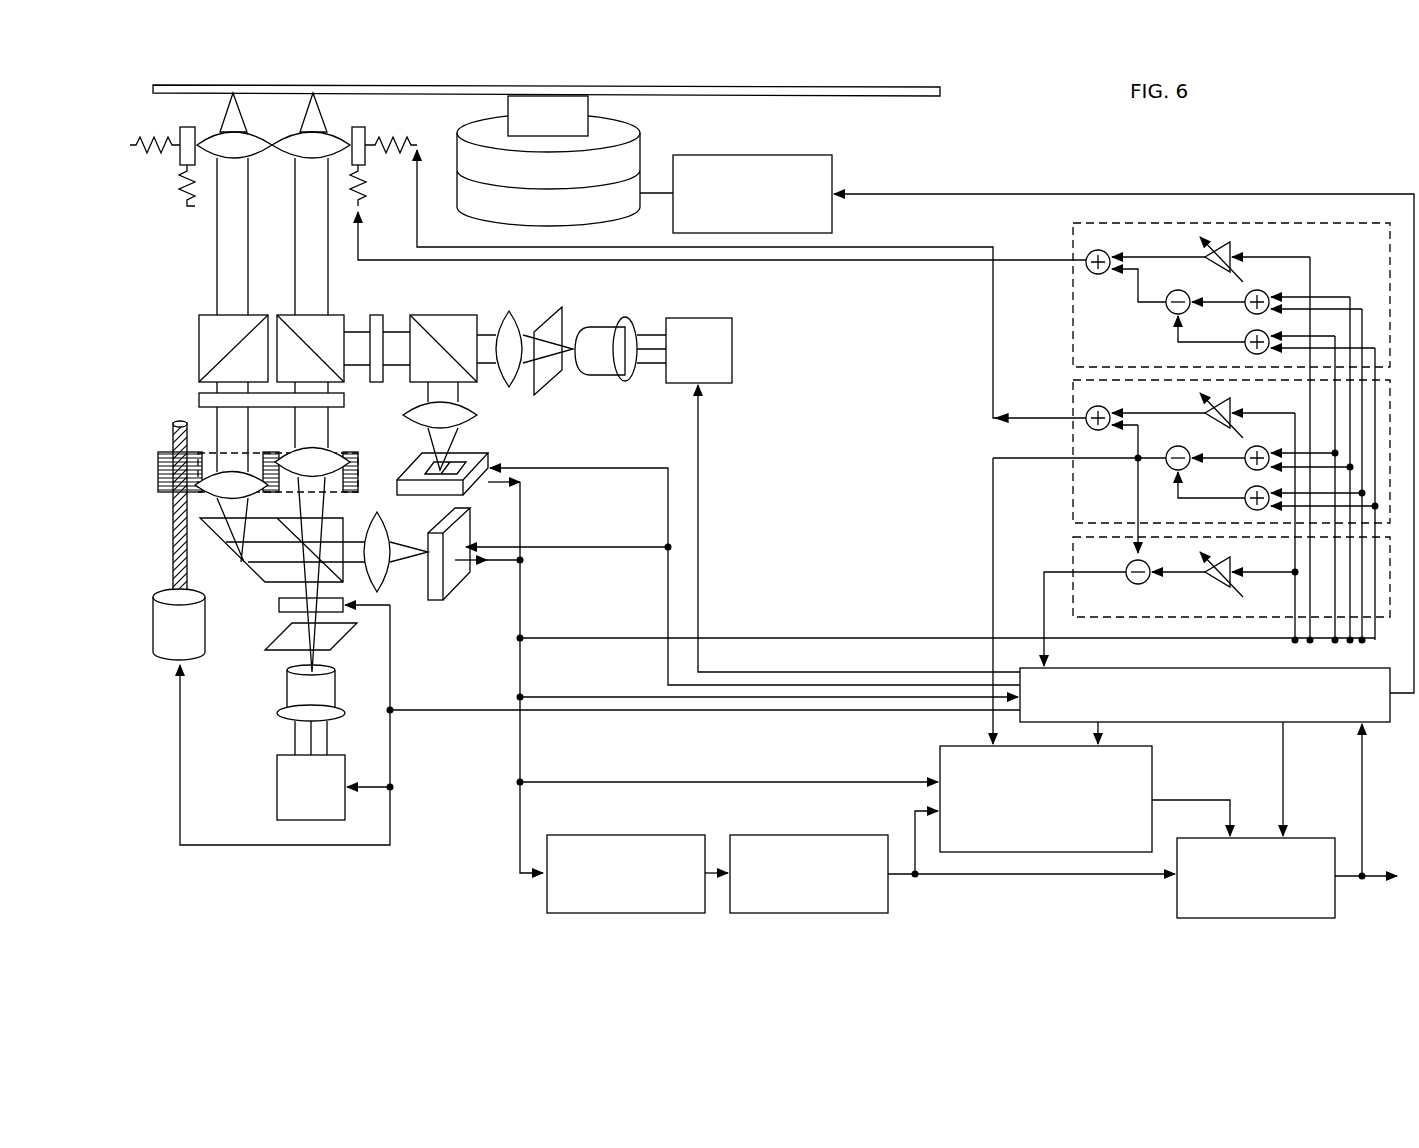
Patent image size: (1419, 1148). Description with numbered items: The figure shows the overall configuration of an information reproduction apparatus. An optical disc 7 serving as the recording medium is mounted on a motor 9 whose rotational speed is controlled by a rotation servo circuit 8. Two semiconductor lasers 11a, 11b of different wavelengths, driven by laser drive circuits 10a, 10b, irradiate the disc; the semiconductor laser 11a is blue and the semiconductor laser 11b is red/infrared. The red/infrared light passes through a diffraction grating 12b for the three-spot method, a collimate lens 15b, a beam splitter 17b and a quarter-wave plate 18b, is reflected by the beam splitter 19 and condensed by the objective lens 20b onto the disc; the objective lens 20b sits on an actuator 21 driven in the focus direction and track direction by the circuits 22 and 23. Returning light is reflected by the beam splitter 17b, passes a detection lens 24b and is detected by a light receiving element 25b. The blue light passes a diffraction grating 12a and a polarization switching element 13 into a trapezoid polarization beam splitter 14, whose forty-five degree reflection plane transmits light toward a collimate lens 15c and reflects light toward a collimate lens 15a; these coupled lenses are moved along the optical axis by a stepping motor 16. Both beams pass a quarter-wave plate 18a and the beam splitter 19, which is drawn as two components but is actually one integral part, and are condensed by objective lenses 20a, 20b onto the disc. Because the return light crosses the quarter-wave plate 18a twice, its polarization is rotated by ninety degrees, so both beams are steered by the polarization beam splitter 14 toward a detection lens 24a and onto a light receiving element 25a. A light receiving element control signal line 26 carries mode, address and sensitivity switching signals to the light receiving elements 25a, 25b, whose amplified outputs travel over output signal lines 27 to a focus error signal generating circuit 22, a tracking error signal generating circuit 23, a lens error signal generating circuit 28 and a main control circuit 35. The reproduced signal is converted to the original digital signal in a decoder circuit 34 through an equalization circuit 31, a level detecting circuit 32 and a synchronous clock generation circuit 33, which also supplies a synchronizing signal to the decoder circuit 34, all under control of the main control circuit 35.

The optical disc 7 is at (942, 95).
The rotation servo circuit 8 is at (835, 168).
The motor 9 is at (643, 140).
The laser drive circuit 10a is at (276, 787).
The laser drive circuit 10b is at (733, 350).
The semiconductor laser 11a is at (276, 716).
The semiconductor laser 11b is at (622, 320).
The diffraction grating 12a is at (276, 652).
The diffraction grating 12b is at (545, 318).
The polarization switching element 13 is at (276, 605).
The trapezoid polarization beam splitter 14 is at (247, 577).
The collimate lens 15a is at (258, 470).
The collimate lens 15b is at (508, 310).
The collimate lens 15c is at (327, 458).
The stepping motor 16 is at (152, 625).
The beam splitter 17b is at (445, 313).
The λ/4 plate 18a is at (198, 400).
The λ/4 plate 18b is at (376, 313).
The beam splitter 19 is at (198, 352).
The objective lens 20a is at (218, 134).
The objective lens 20b is at (337, 134).
The actuator 21 is at (165, 185).
The focus error signal generating circuit 22 is at (1070, 318).
The tracking error signal generating circuit 23 is at (1070, 487).
The detection lens 24a is at (382, 533).
The detection lens 24b is at (477, 412).
The light receiving element 25a is at (462, 575).
The light receiving element 25b is at (490, 462).
The light receiving element control signal line 26 is at (617, 467).
The light receiving element output signal lines 27 is at (523, 520).
The lens error signal generating circuit 28 is at (1070, 555).
The equalization circuit 31 is at (628, 835).
The level detecting circuit 32 is at (812, 835).
The synchronous clock generation circuit 33 is at (938, 760).
The decoder circuit 34 is at (1310, 838).
The main control circuit 35 is at (1212, 722).